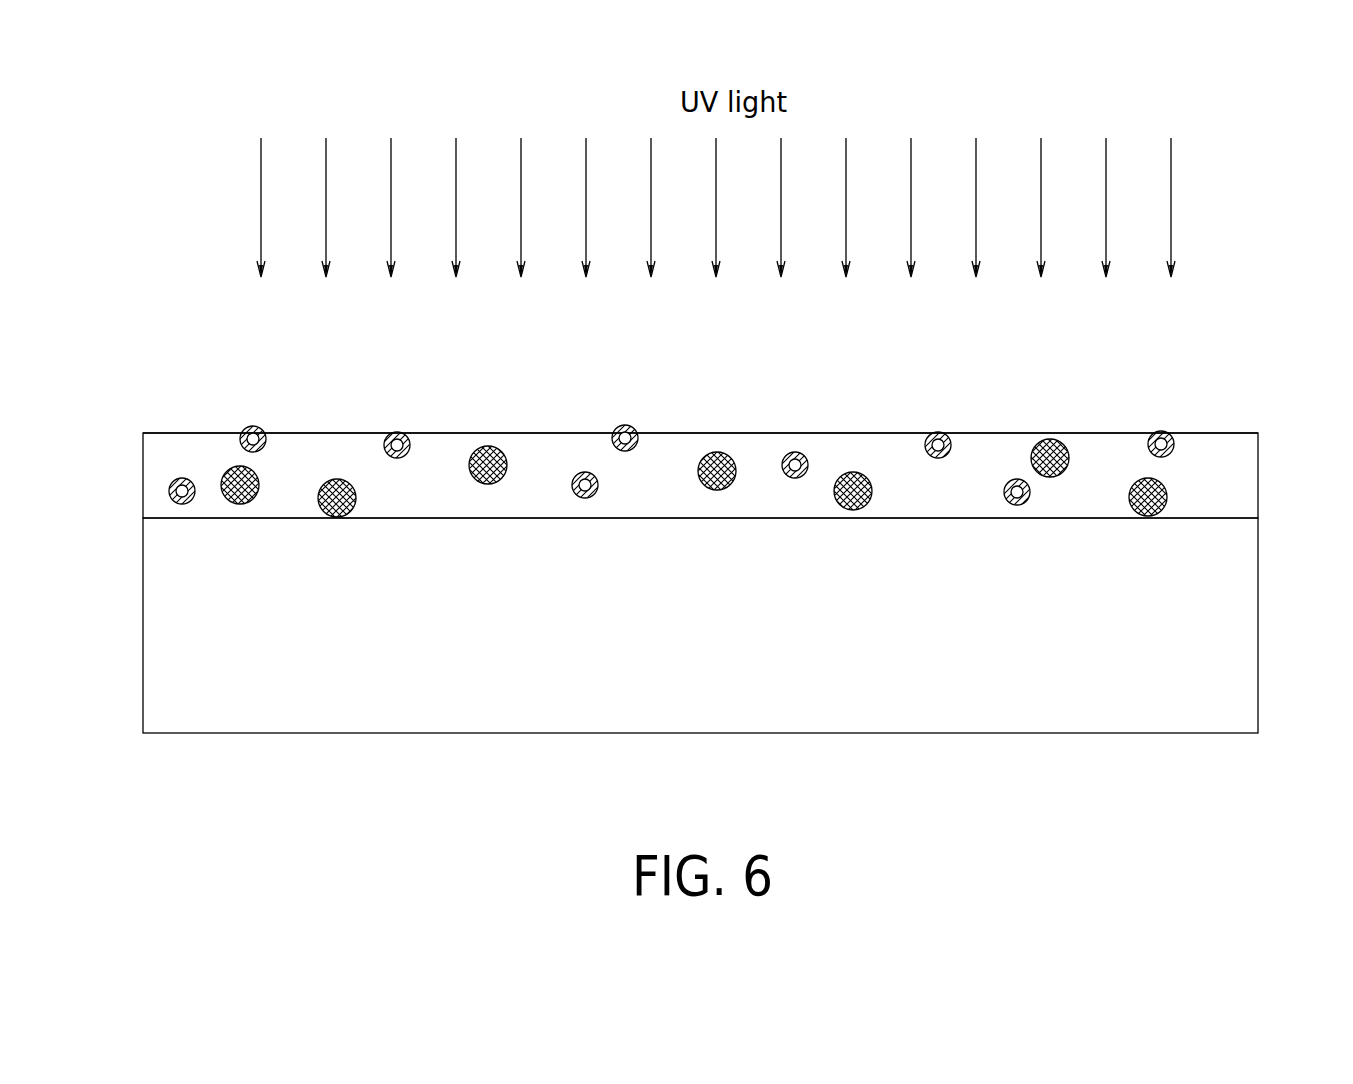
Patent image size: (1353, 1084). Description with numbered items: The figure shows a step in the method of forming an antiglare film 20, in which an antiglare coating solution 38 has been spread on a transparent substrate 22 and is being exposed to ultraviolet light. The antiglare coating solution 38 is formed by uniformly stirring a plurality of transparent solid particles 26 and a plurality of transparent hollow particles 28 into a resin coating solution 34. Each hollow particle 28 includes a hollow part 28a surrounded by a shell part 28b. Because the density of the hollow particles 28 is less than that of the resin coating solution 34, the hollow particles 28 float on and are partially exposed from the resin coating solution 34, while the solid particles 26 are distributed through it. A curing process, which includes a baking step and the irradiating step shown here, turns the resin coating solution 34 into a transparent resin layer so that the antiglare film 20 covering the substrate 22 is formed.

The antiglare film 20 is at (1237, 268).
The substrate 22 is at (1242, 645).
The solid particles 26 is at (231, 461).
The hollow particles 28 is at (412, 435).
The hollow part 28a is at (944, 436).
The shell part 28b is at (927, 435).
The resin coating solution 34 is at (1242, 482).
The antiglare coating solution 38 is at (131, 469).